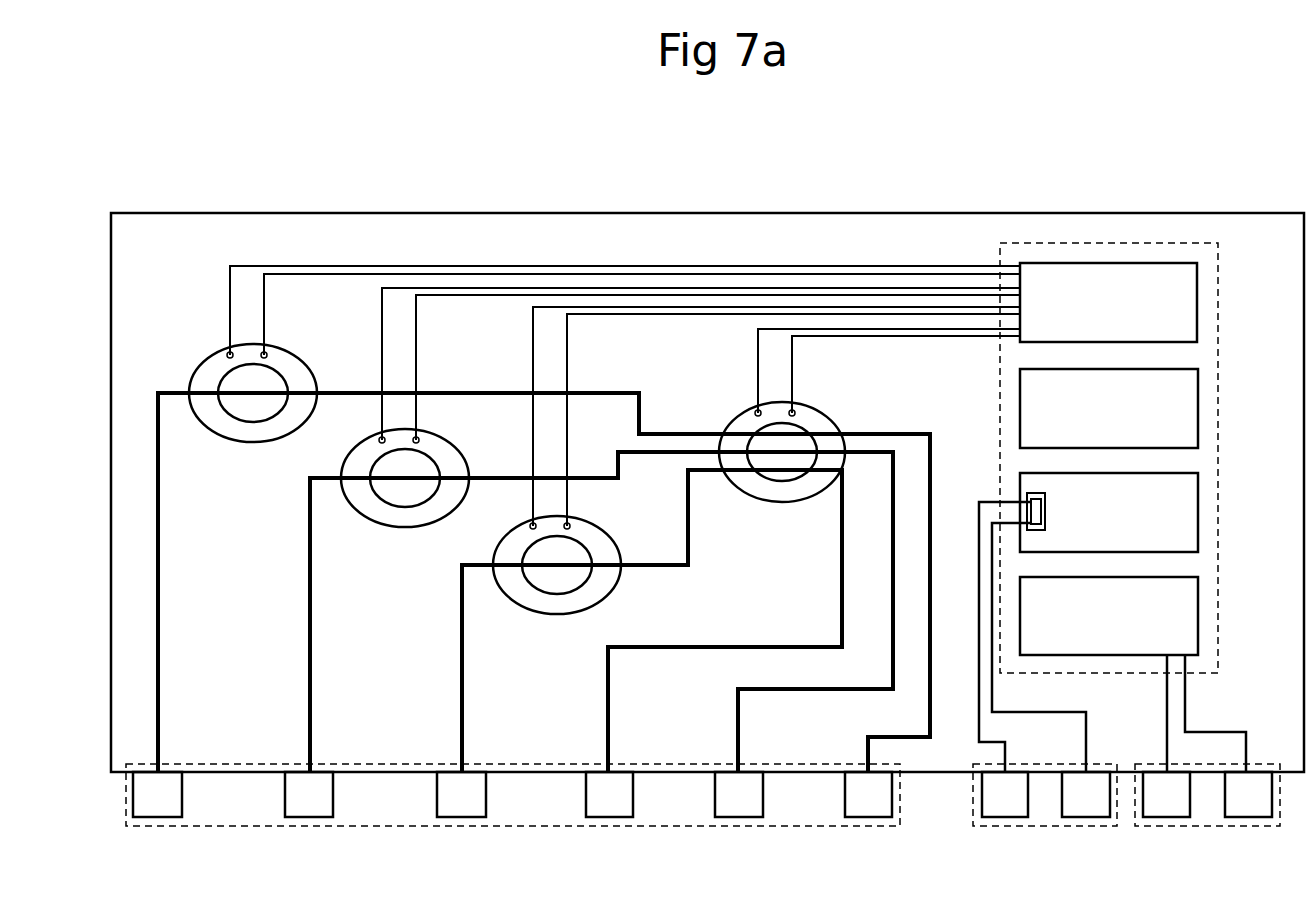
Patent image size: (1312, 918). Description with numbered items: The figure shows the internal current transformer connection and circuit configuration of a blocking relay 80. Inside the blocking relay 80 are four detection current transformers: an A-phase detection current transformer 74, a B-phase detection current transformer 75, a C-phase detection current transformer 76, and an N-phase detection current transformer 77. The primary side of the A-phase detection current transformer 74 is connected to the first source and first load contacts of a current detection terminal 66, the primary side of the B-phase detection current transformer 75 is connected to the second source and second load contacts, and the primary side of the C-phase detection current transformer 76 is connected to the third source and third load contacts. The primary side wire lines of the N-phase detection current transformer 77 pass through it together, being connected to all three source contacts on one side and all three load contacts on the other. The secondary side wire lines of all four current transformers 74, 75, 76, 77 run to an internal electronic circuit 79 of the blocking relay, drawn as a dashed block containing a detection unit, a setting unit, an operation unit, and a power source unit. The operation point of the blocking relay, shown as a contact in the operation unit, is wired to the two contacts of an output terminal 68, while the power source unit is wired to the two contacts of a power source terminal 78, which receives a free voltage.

The current detection terminal 66 is at (533, 826).
The output terminal 68 is at (1052, 826).
The A-phase detection current transformer 74 is at (247, 443).
The B-phase detection current transformer 75 is at (406, 528).
The C-phase detection current transformer 76 is at (558, 615).
The N-phase detection current transformer 77 is at (781, 503).
The power source terminal 78 is at (1195, 826).
The internal electronic circuit 79 is at (1098, 243).
The blocking relay 80 is at (707, 213).